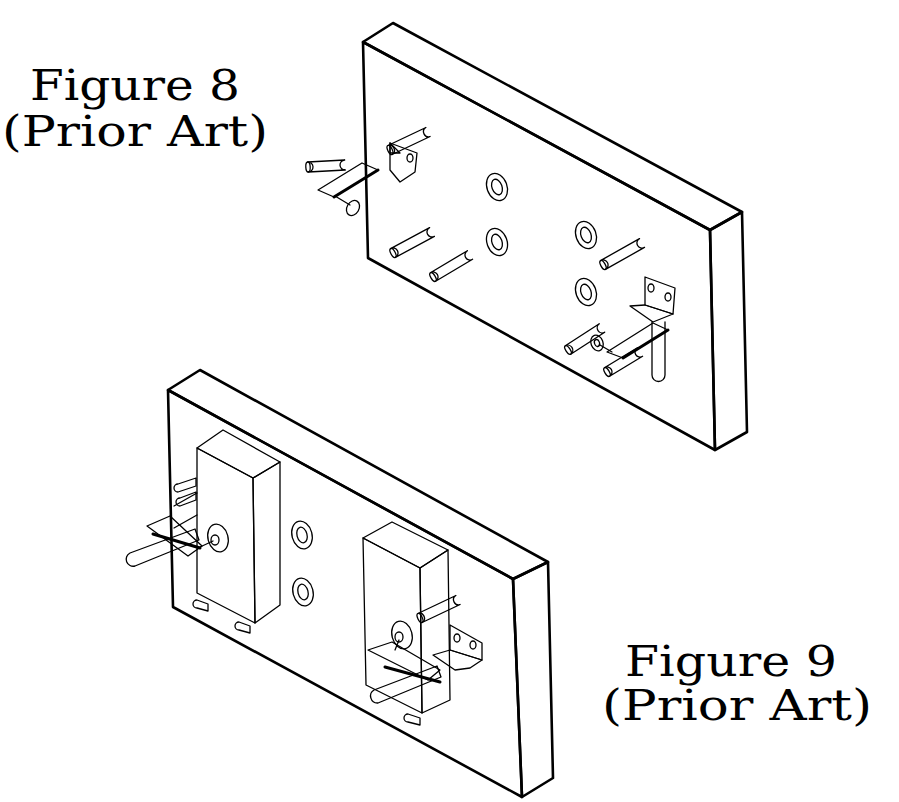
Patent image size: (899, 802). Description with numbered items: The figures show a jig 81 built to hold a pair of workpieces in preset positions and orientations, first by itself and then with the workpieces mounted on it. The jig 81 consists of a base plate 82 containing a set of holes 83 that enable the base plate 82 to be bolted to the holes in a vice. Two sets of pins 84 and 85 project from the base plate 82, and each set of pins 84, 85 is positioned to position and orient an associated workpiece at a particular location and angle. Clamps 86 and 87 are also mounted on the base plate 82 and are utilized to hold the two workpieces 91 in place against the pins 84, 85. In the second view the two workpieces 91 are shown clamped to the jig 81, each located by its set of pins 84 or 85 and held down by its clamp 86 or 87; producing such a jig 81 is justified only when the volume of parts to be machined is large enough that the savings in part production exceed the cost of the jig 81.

In FIG. 8, the jig 81 is at (341, 92).
In FIG. 8, the base plate 82 is at (567, 186).
In FIG. 8, the holes 83 is at (500, 175).
In FIG. 8, the pins 84 is at (622, 247).
In FIG. 8, the pins 85 is at (415, 130).
In FIG. 8, the clamp 86 is at (640, 340).
In FIG. 8, the clamp 87 is at (322, 190).
In FIG. 9, the workpieces 91 is at (237, 514).